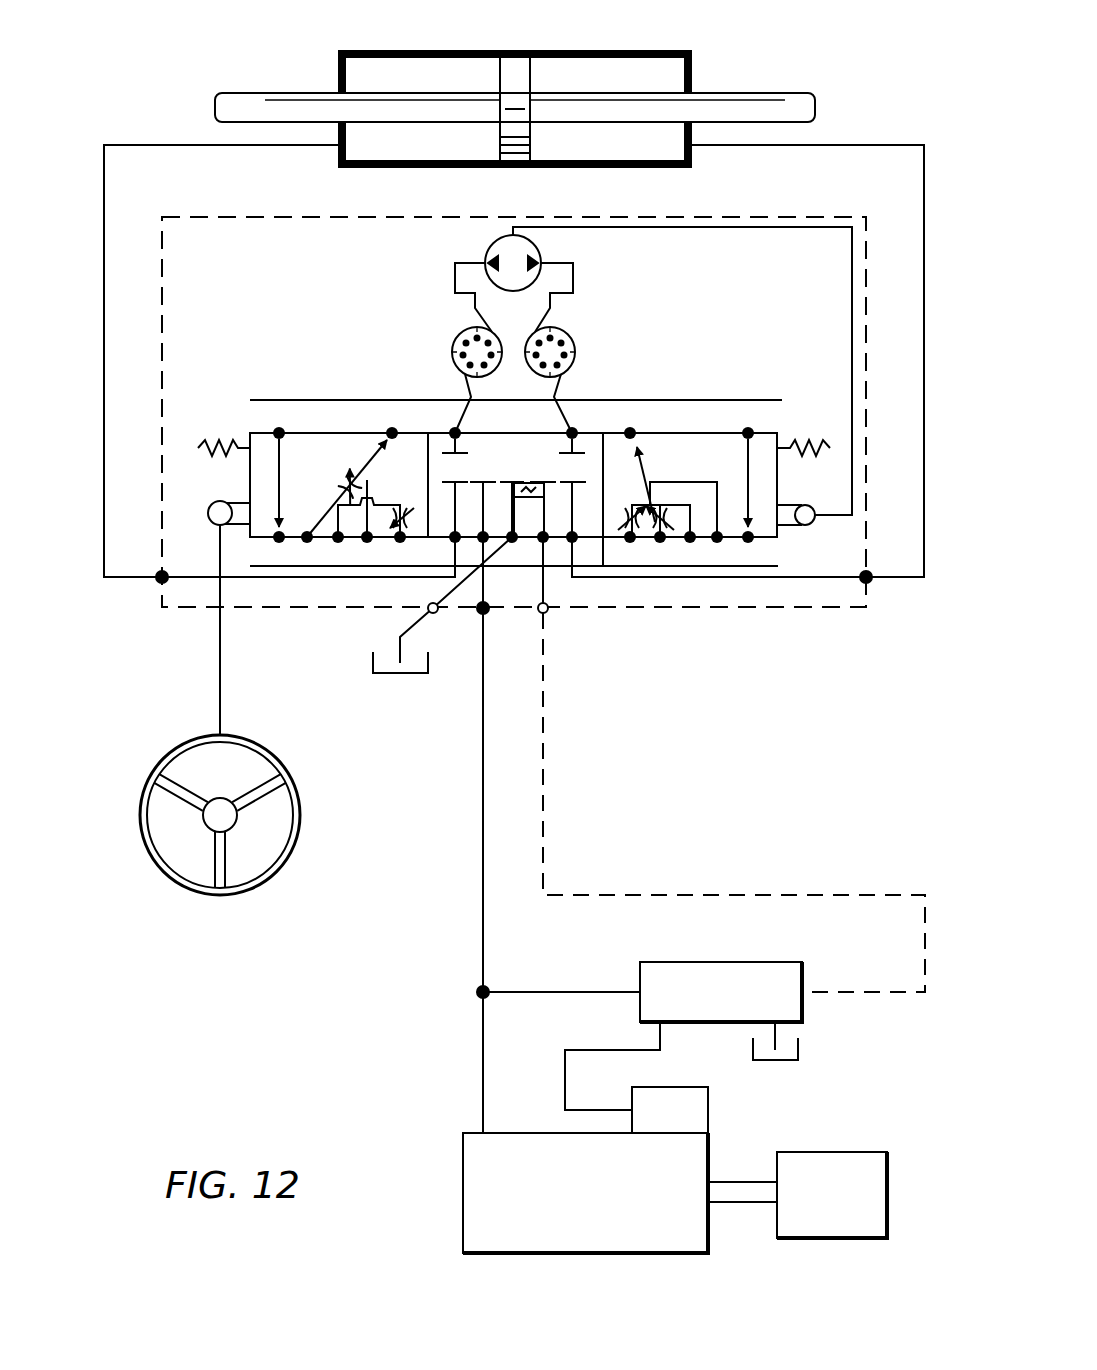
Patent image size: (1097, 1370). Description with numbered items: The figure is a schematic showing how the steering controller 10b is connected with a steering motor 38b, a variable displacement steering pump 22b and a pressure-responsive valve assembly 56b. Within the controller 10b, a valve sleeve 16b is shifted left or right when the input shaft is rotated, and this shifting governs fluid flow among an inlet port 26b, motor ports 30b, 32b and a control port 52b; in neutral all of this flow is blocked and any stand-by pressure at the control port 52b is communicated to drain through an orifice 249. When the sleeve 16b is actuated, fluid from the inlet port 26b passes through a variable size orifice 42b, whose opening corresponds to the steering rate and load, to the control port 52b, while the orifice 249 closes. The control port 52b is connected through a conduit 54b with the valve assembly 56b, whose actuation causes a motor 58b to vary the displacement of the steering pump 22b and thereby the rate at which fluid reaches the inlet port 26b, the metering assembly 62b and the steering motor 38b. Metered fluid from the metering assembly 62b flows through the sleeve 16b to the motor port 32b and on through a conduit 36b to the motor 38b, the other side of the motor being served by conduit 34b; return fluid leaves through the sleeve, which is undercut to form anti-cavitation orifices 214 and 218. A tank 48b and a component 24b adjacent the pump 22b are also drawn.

The steering motor 38b is at (702, 81).
The conduit 34b is at (104, 150).
The conduit 36b is at (924, 148).
The controller 10b is at (824, 214).
The motor port 30b is at (160, 580).
The motor port 32b is at (868, 580).
The metering assembly 62b is at (585, 300).
The valve sleeve 16b is at (778, 432).
The variable size orifice 42b is at (343, 480).
The anti-cavitation orifice 214 is at (398, 509).
The orifice 249 is at (517, 486).
The anti-cavitation orifice 218 is at (610, 566).
The inlet port 26b is at (486, 612).
The control port 52b is at (548, 613).
The conduit 54b is at (545, 718).
The return tank 48b is at (428, 675).
The pressure-responsive valve assembly 56b is at (714, 968).
The motor 58b is at (700, 1096).
The steering pump 22b is at (463, 1192).
The reservoir 24b is at (898, 1143).